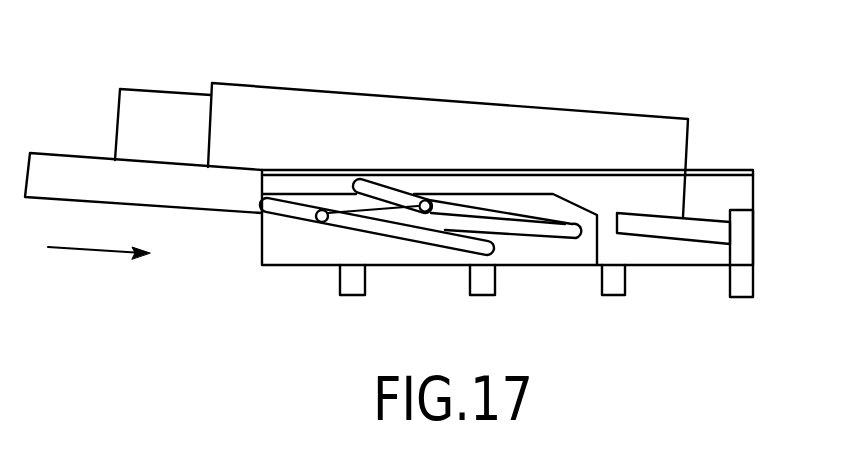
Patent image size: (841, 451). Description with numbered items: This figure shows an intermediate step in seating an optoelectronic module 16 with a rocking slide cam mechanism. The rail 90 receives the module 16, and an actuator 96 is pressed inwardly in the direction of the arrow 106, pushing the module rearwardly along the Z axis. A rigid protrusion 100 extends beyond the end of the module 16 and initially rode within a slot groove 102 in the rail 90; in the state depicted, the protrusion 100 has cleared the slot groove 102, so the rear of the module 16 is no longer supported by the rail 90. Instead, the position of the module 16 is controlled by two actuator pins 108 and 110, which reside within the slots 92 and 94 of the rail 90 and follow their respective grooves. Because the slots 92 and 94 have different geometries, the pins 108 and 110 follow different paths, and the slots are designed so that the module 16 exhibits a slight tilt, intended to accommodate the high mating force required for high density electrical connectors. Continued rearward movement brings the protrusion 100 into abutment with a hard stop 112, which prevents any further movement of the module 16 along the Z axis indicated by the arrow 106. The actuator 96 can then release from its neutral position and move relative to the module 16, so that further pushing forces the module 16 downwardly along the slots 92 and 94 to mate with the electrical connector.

The optoelectronic module 16 is at (228, 95).
The rail 90 is at (740, 195).
The slot 92 is at (420, 245).
The slot 94 is at (533, 230).
The actuator 96 is at (58, 167).
The rigid protrusion 100 is at (695, 233).
The slot groove 102 is at (537, 194).
The arrow 106 is at (93, 250).
The actuator pin 108 is at (318, 229).
The actuator pin 110 is at (329, 222).
The hard stop 112 is at (745, 300).